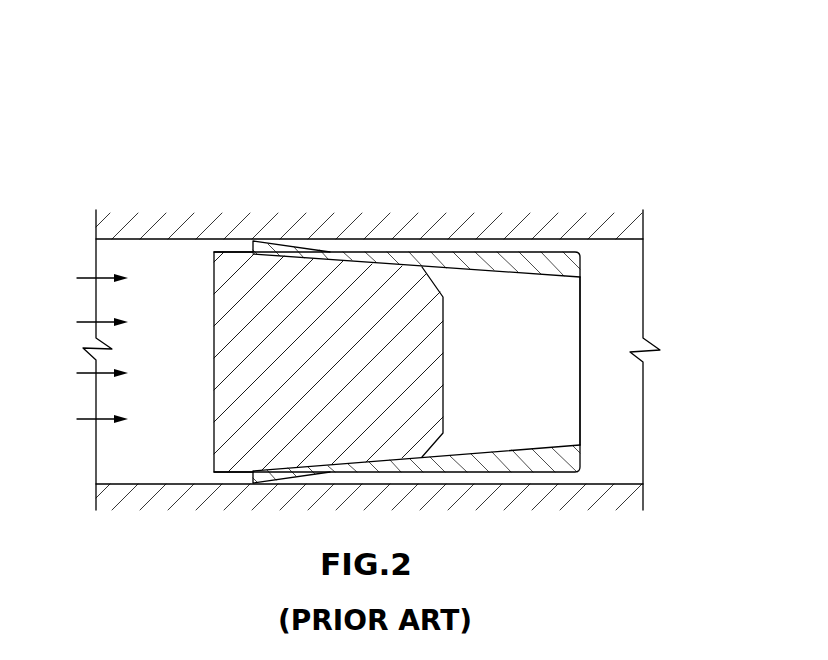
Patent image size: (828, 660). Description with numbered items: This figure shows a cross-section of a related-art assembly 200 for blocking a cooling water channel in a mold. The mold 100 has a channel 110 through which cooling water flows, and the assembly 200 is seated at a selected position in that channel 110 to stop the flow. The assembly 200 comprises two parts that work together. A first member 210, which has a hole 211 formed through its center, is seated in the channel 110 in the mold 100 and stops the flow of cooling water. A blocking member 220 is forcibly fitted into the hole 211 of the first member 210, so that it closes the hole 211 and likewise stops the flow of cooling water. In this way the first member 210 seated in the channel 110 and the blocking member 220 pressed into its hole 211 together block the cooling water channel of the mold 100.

The mold 100 is at (382, 233).
The channel 110 is at (200, 365).
The assembly for blocking a cooling water channel 200 is at (308, 228).
The first member 210 is at (483, 263).
The hole 211 is at (515, 345).
The blocking member 220 is at (252, 290).